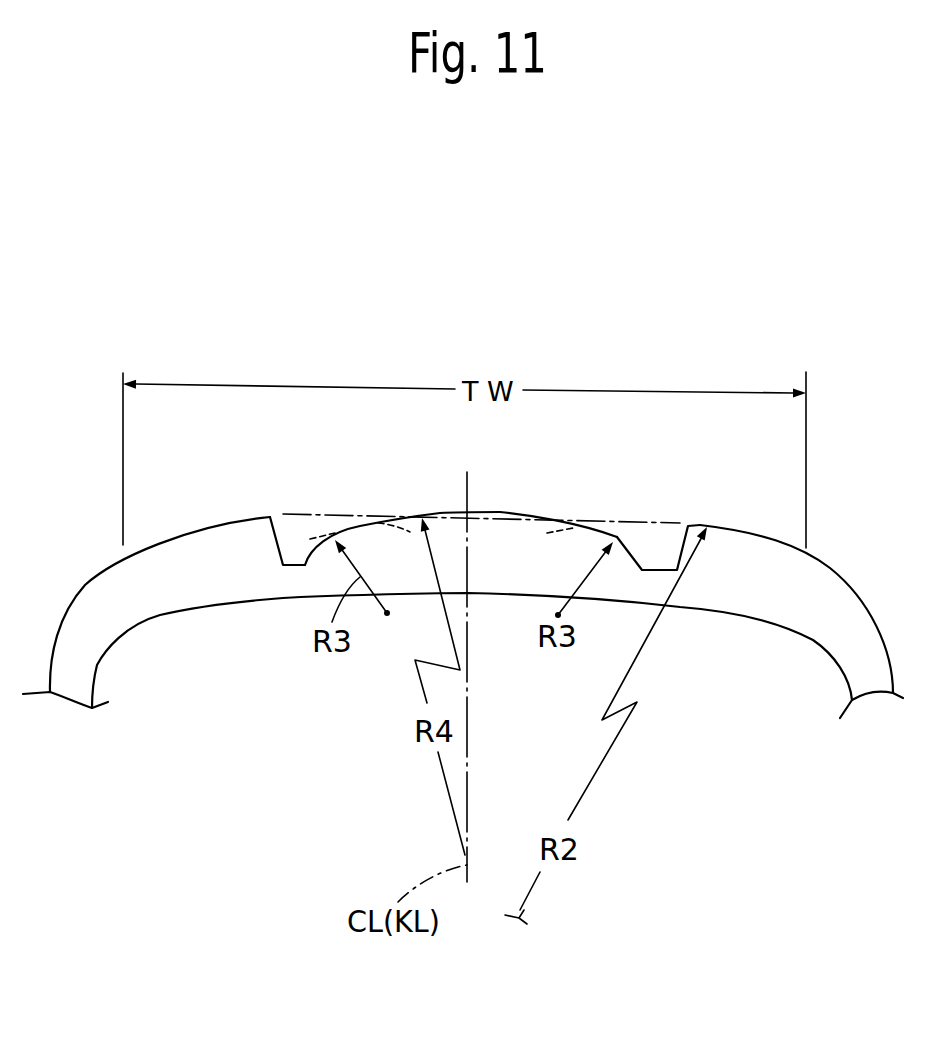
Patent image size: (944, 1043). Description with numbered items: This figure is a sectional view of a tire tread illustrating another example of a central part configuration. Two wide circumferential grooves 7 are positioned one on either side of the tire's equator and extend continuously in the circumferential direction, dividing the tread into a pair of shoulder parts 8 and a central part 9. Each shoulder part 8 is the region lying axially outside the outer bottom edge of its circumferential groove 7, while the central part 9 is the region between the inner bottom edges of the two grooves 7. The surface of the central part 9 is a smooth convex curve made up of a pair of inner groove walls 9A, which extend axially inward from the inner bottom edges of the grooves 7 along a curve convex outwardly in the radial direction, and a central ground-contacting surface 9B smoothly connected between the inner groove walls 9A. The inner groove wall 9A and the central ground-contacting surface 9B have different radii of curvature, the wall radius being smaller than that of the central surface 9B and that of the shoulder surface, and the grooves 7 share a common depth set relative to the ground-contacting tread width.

The circumferential groove 7 is at (272, 508).
The shoulder part 8 is at (175, 517).
The central part 9 is at (428, 496).
The inner groove wall 9A is at (312, 552).
The central ground-contacting surface 9B is at (500, 512).